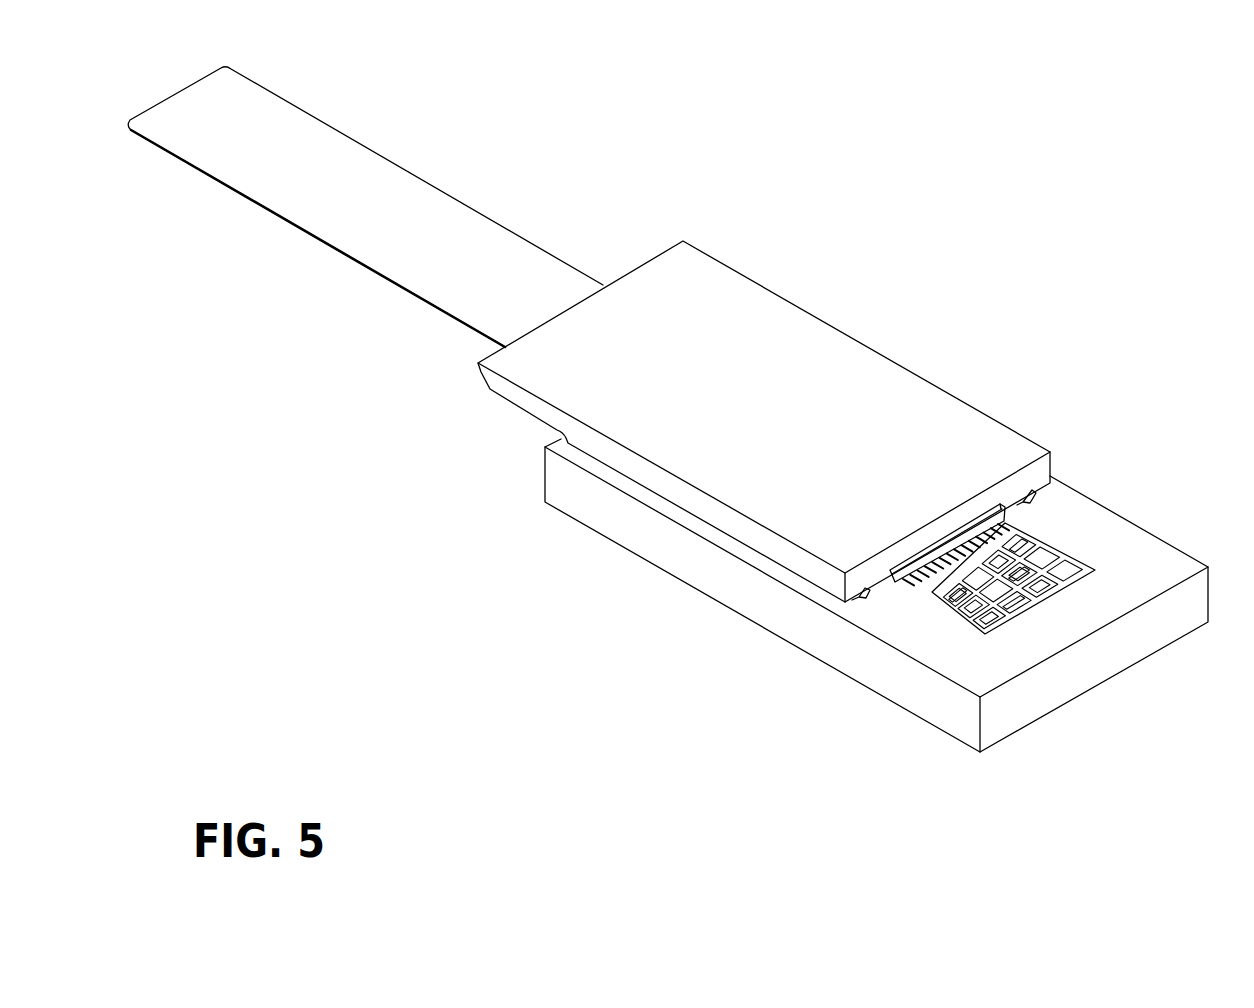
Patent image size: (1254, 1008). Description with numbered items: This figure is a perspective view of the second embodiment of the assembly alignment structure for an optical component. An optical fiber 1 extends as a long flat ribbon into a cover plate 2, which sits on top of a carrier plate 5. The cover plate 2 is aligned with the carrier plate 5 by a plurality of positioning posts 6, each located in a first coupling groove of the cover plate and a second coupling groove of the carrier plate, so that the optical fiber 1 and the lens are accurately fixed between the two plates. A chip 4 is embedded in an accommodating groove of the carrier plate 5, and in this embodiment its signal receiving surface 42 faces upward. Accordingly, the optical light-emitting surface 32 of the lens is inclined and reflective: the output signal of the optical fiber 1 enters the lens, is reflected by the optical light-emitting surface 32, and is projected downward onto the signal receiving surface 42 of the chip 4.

The optical fiber 1 is at (466, 176).
The cover plate 2 is at (823, 357).
The optical light-emitting surface 32 is at (985, 522).
The signal receiving surface 42 is at (1010, 522).
The chip 4 is at (1057, 553).
The carrier plate 5 is at (1077, 673).
The positioning post 6 is at (863, 597).